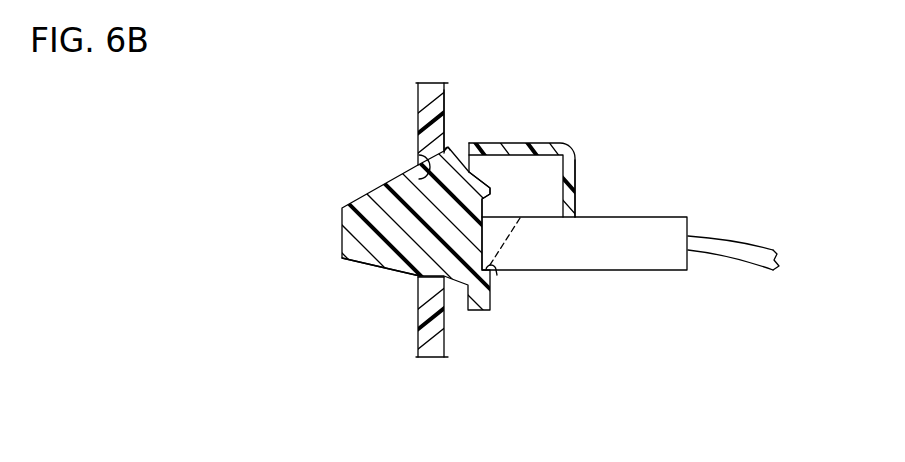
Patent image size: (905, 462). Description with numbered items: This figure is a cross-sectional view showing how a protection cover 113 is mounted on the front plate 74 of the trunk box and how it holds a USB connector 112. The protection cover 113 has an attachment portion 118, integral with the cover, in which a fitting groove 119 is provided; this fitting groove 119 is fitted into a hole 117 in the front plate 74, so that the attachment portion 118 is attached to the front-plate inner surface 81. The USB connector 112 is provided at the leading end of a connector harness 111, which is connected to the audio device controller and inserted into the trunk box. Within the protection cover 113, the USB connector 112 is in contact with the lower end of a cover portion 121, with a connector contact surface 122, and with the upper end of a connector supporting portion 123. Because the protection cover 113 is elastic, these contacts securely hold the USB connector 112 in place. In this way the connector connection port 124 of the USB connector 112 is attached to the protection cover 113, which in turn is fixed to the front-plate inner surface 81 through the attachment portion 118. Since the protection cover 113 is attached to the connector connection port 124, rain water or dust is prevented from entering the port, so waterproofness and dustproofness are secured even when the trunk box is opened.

The front plate 74 is at (418, 108).
The front-plate inner surface 81 is at (444, 117).
The connector harness 111 is at (737, 237).
The USB connector 112 is at (604, 271).
The protection cover 113 is at (562, 139).
The hole 117 is at (428, 245).
The attachment portion 118 is at (366, 267).
The fitting groove 119 is at (422, 160).
The cover portion 121 is at (573, 158).
The connector contact surface 122 is at (493, 238).
The connector supporting portion 123 is at (497, 270).
The connector connection port 124 is at (480, 238).